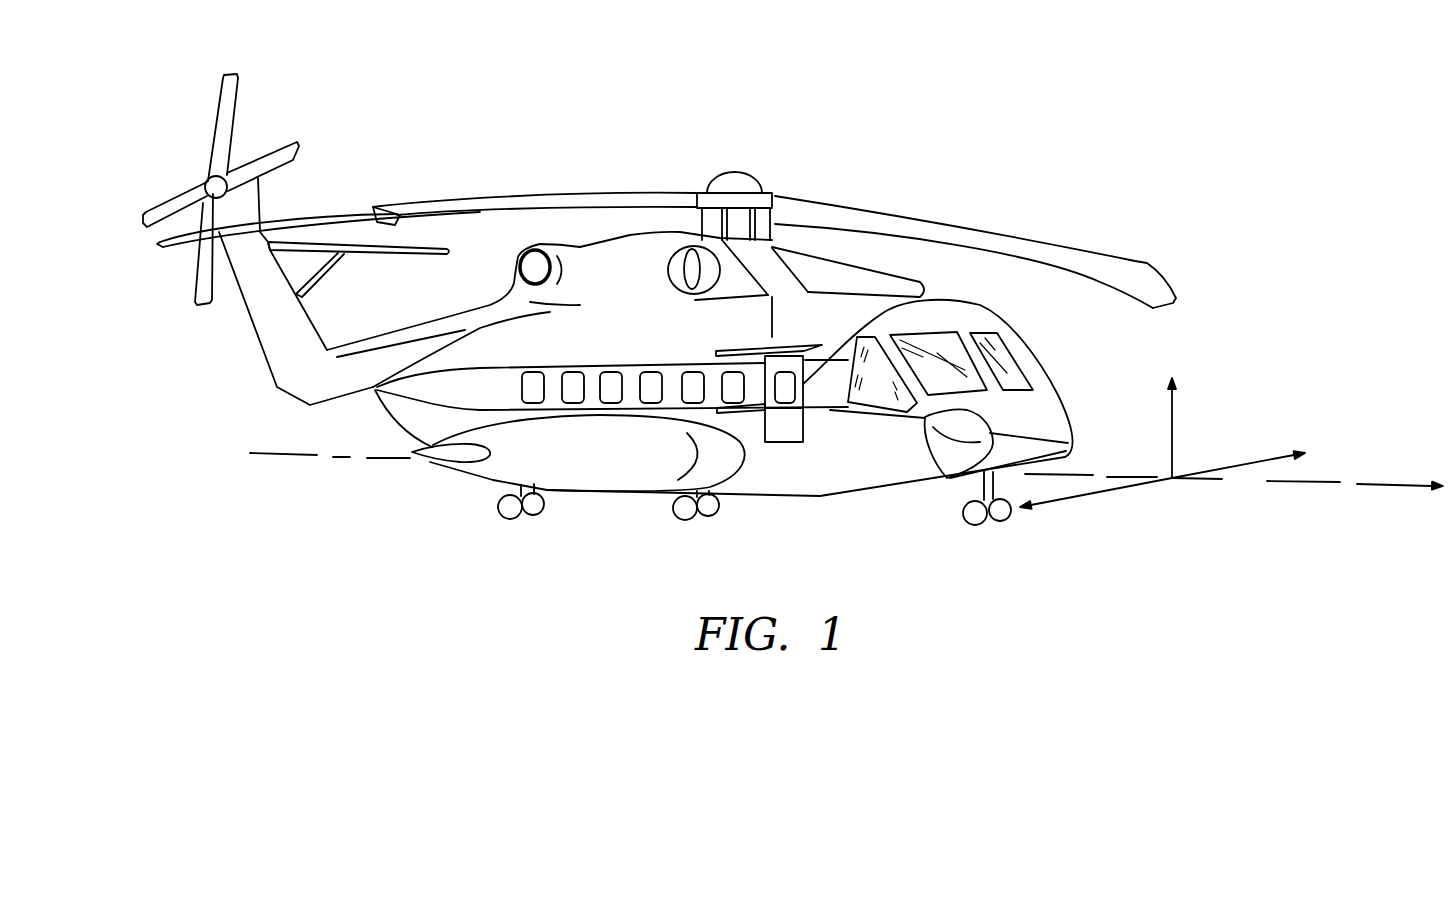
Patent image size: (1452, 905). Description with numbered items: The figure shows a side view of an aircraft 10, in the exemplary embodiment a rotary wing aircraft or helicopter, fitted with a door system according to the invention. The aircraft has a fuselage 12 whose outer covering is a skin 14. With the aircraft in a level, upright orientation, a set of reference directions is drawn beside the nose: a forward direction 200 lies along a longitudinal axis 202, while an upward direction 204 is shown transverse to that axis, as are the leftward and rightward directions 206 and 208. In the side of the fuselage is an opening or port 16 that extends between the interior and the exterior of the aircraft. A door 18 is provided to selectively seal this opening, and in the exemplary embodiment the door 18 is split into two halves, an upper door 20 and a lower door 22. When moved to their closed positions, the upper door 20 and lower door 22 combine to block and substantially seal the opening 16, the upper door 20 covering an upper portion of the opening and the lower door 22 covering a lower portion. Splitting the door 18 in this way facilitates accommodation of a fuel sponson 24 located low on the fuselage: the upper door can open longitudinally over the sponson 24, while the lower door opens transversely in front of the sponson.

The aircraft 10 is at (1025, 172).
The fuselage 12 is at (467, 391).
The skin 14 is at (828, 422).
The opening 16 is at (910, 298).
The door 18 is at (787, 424).
The upper door 20 is at (763, 364).
The lower door 22 is at (772, 432).
The fuel sponson 24 is at (660, 468).
The forward direction 200 is at (1392, 487).
The longitudinal axis 202 is at (1290, 480).
The upward direction 204 is at (1170, 425).
The leftward direction 206 is at (1233, 467).
The rightward direction 208 is at (1093, 493).